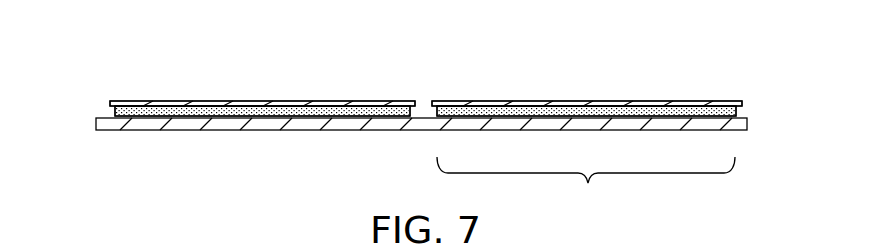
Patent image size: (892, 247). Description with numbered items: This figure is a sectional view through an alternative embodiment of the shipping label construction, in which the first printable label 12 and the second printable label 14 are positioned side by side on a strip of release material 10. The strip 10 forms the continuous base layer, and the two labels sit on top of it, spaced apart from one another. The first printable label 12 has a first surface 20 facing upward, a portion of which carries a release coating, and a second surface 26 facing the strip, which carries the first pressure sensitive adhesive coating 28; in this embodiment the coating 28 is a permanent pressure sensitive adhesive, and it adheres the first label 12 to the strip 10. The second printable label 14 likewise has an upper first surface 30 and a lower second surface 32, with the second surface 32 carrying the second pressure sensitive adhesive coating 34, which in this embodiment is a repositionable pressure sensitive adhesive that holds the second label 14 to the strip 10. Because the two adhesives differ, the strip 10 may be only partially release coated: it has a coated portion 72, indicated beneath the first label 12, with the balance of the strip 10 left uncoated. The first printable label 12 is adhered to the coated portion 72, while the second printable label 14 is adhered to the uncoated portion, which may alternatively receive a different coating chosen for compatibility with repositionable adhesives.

The strip of release material 10 is at (143, 125).
The first printable label 12 is at (727, 102).
The second printable label 14 is at (112, 102).
The first surface 20 is at (517, 100).
The second surface 26 is at (502, 108).
The first pressure sensitive adhesive coating 28 is at (737, 115).
The first surface 30 is at (150, 100).
The second surface 32 is at (308, 112).
The second pressure sensitive adhesive coating 34 is at (113, 114).
The coated portion 72 is at (586, 188).